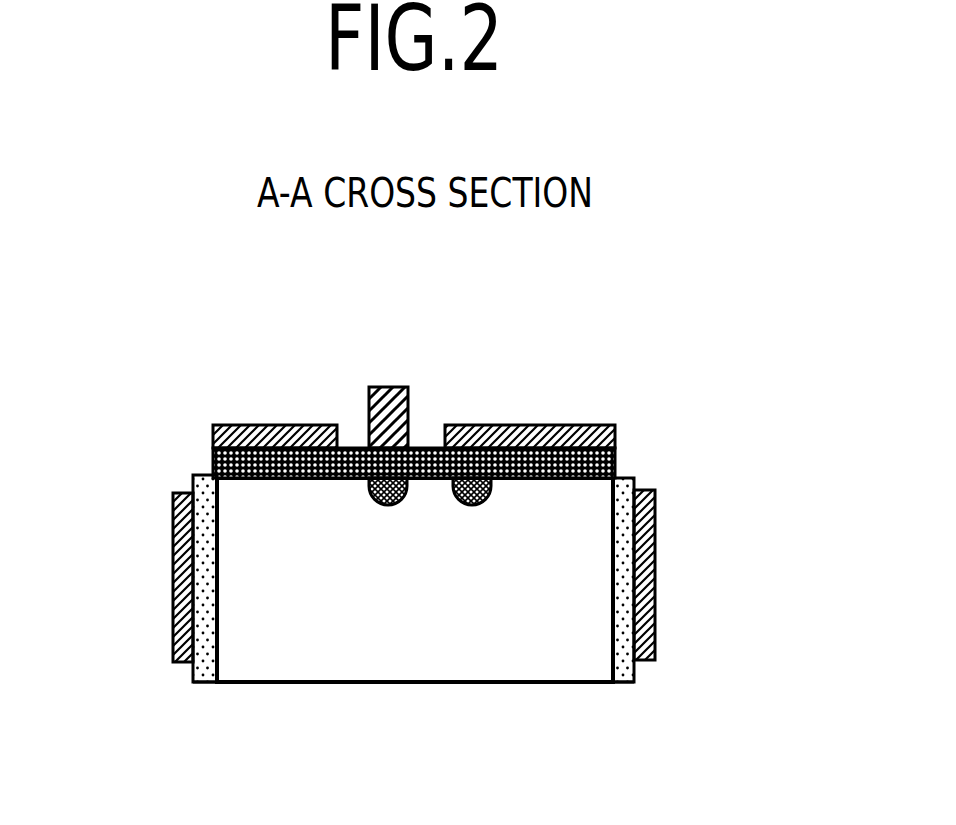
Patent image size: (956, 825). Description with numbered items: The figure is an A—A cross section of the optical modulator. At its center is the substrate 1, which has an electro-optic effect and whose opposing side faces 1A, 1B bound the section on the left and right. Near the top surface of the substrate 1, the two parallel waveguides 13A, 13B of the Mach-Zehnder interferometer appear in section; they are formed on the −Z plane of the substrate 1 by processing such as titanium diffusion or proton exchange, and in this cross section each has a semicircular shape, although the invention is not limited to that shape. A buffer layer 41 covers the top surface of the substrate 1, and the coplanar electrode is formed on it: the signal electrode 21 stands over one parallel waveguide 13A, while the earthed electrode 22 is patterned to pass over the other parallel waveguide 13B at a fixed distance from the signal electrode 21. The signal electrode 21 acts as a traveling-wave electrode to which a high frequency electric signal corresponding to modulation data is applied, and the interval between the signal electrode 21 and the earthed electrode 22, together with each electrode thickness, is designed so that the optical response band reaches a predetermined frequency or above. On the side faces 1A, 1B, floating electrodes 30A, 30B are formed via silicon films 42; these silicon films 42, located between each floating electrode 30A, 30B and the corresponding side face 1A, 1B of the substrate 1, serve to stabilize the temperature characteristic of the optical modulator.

The substrate 1 is at (407, 683).
The side face 1A is at (218, 603).
The side face 1B is at (612, 608).
The parallel waveguide 13A is at (368, 427).
The parallel waveguide 13B is at (505, 425).
The signal electrode 21 is at (397, 387).
The earthed electrode 22 is at (258, 425).
The floating electrode 30A is at (173, 568).
The floating electrode 30B is at (655, 562).
The buffer layer 41 is at (618, 463).
The silicon film 42 is at (203, 683).